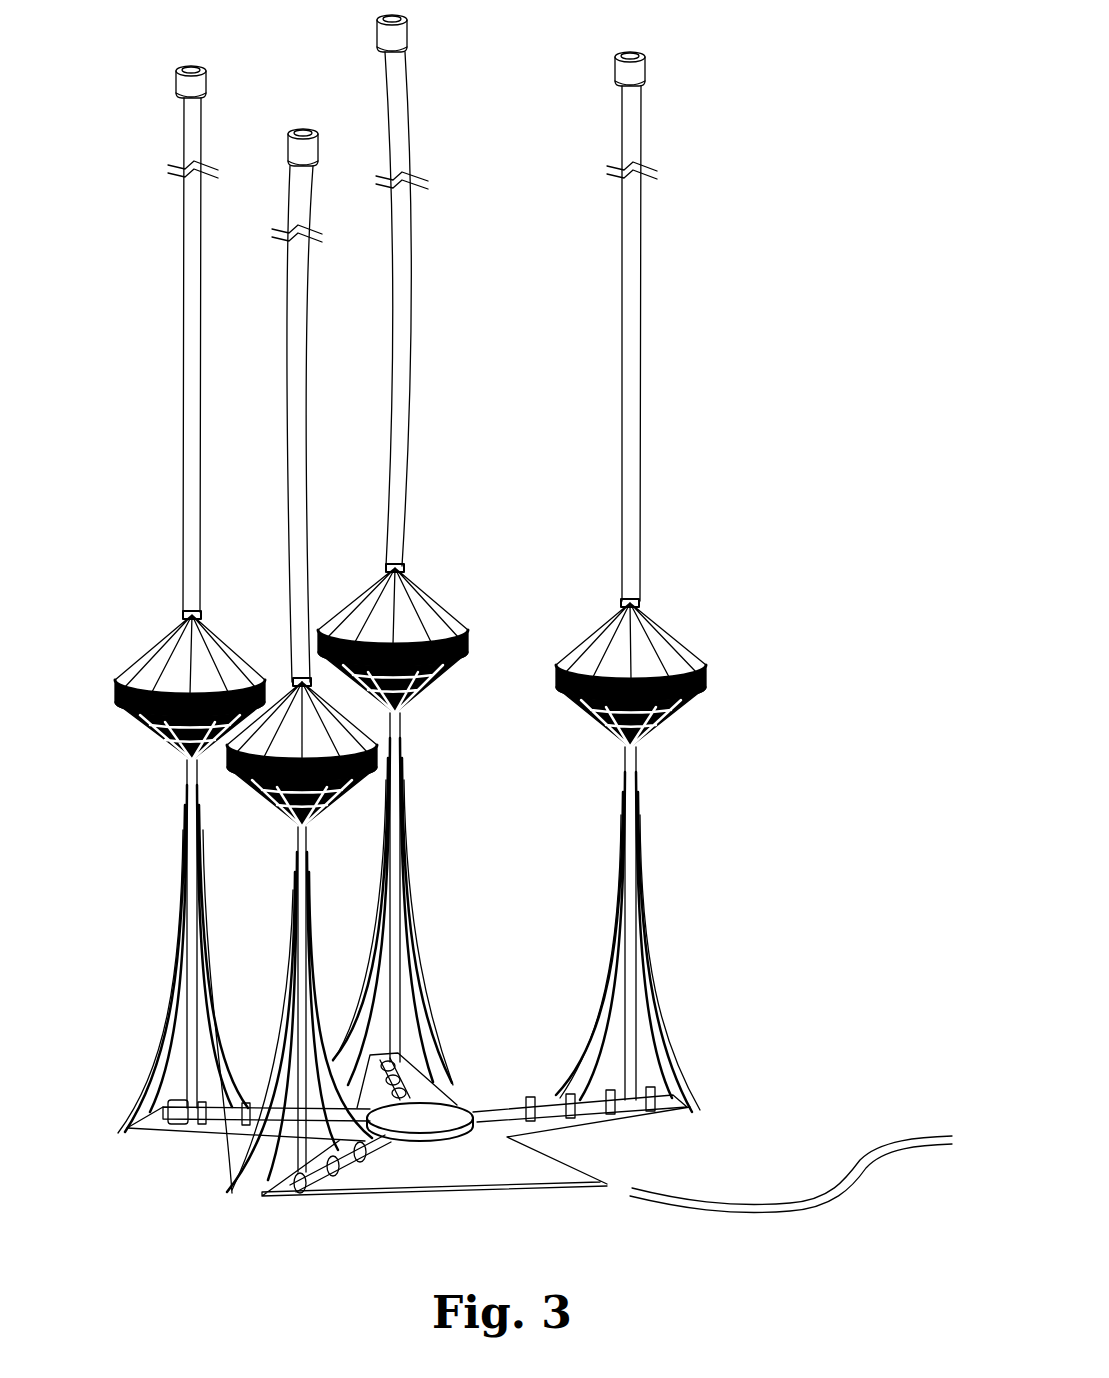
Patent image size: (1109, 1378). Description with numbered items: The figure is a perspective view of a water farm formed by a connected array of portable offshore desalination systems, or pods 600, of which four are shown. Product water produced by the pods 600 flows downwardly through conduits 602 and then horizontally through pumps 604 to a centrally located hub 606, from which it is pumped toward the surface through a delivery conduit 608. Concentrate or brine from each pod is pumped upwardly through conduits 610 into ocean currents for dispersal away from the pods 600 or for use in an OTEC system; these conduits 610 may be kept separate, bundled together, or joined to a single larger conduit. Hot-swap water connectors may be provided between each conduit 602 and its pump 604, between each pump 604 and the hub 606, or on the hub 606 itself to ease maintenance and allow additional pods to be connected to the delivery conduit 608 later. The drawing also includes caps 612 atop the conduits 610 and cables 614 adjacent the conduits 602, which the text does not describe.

The portable offshore desalination system (pod) 600 is at (135, 633).
The conduit 602 is at (398, 930).
The pump 604 is at (405, 1062).
The hub 606 is at (452, 1120).
The delivery conduit 608 is at (745, 1205).
The conduit 610 is at (196, 333).
The cap 612 is at (195, 88).
The cables 614 is at (416, 976).